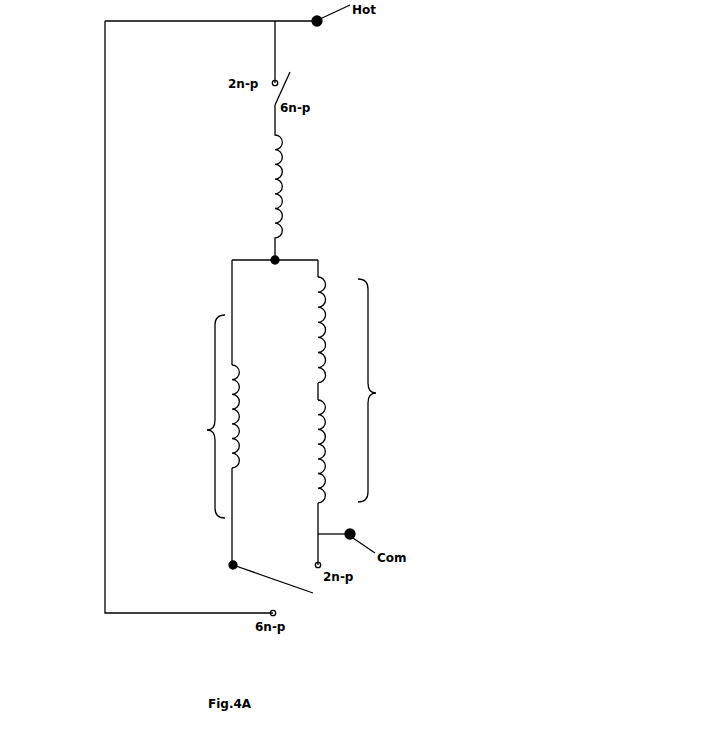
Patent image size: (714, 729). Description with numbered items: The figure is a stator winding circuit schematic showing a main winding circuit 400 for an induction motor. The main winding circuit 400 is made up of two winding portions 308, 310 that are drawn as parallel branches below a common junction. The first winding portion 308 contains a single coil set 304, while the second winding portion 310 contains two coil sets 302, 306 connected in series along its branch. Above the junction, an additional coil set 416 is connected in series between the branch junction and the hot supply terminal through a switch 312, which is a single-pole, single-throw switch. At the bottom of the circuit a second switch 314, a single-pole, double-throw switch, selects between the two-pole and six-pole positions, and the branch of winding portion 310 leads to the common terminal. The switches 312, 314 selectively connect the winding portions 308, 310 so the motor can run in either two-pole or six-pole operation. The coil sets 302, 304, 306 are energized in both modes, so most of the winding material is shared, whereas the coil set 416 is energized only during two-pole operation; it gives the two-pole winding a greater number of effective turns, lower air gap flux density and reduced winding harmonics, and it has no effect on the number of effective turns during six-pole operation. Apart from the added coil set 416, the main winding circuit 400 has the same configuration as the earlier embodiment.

The main winding circuit 400 is at (55, 76).
The switch 312 is at (290, 80).
The coil set 416 is at (275, 170).
The coil set 302 is at (322, 345).
The coil set 304 is at (237, 418).
The coil set 306 is at (322, 435).
The winding portion 308 is at (199, 416).
The winding portion 310 is at (384, 390).
The switch 314 is at (270, 580).